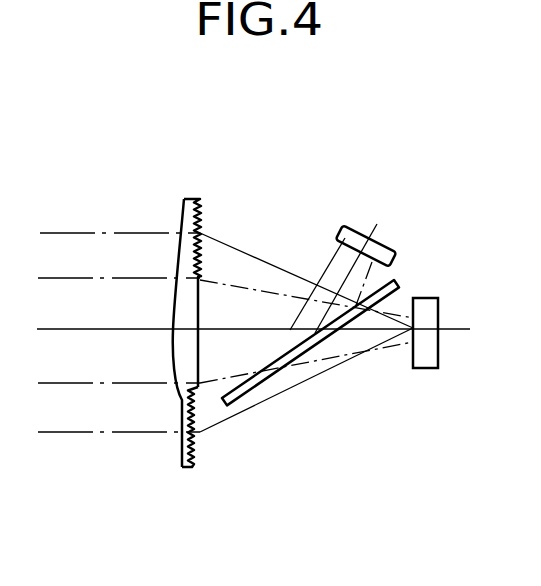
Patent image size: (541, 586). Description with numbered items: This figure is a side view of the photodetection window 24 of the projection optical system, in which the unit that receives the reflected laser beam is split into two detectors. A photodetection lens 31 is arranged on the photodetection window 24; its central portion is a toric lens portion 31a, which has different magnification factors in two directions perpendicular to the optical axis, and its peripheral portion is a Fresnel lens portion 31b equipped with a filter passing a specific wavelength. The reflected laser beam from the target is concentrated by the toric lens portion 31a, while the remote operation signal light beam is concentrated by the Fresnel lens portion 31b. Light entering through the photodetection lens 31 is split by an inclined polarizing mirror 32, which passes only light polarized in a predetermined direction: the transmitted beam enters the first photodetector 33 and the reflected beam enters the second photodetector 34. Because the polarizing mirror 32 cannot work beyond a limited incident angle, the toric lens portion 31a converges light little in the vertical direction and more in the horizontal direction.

The photodetection window 24 is at (152, 182).
The photodetection lens 31 is at (200, 298).
The toric lens portion 31a is at (173, 355).
The Fresnel lens portion 31b is at (195, 450).
The polarizing mirror 32 is at (318, 344).
The first photodetector 33 is at (438, 343).
The second photodetector 34 is at (387, 241).